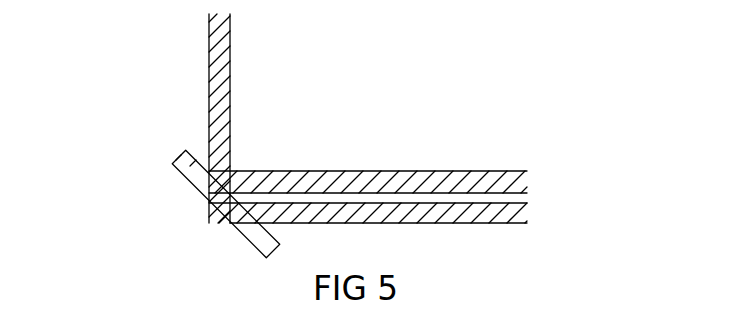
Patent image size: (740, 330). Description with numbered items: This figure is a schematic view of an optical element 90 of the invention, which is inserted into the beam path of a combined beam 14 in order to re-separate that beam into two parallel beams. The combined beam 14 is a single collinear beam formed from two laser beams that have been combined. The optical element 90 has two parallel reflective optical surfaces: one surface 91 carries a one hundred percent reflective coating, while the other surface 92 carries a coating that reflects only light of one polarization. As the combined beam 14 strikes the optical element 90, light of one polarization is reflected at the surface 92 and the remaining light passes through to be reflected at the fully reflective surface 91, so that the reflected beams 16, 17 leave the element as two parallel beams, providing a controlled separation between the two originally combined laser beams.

The combined beam 14 is at (228, 63).
The reflected beam 16 is at (446, 181).
The reflected beam 17 is at (514, 216).
The optical element 90 is at (159, 223).
The optical surface 91 is at (187, 178).
The optical surface 92 is at (193, 153).